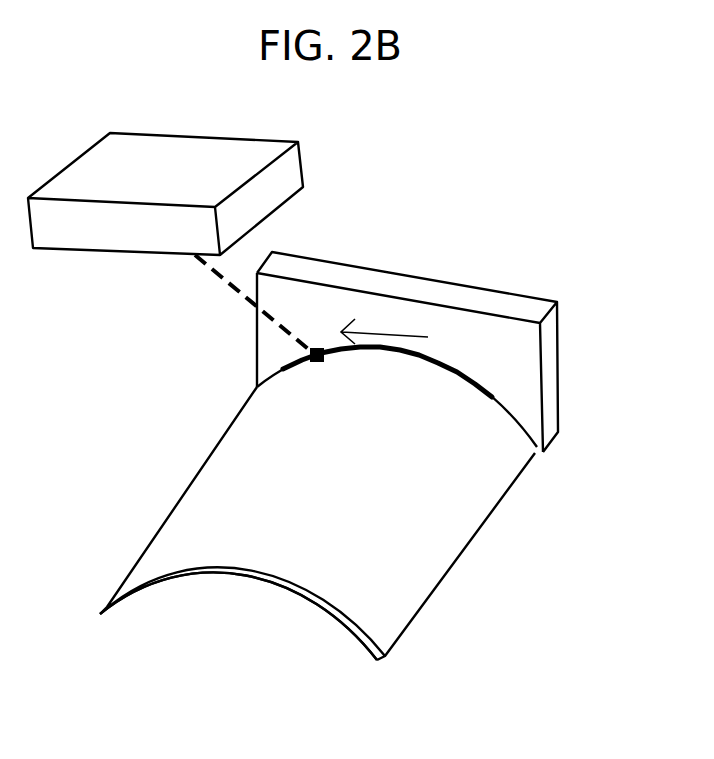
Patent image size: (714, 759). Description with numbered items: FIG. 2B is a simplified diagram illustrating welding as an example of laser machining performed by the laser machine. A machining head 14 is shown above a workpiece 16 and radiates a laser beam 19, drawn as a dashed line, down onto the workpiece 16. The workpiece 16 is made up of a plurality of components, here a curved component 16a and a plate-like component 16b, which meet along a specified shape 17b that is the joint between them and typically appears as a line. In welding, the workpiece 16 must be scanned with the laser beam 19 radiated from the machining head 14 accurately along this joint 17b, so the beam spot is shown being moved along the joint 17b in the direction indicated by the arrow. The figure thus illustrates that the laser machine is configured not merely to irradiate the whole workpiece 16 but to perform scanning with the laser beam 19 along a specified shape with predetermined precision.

The machining head 14 is at (53, 252).
The laser beam 19 is at (243, 296).
The workpiece 16 is at (172, 603).
The component 16a is at (315, 605).
The component 16b is at (498, 288).
The specified shape (joint) 17b is at (472, 375).